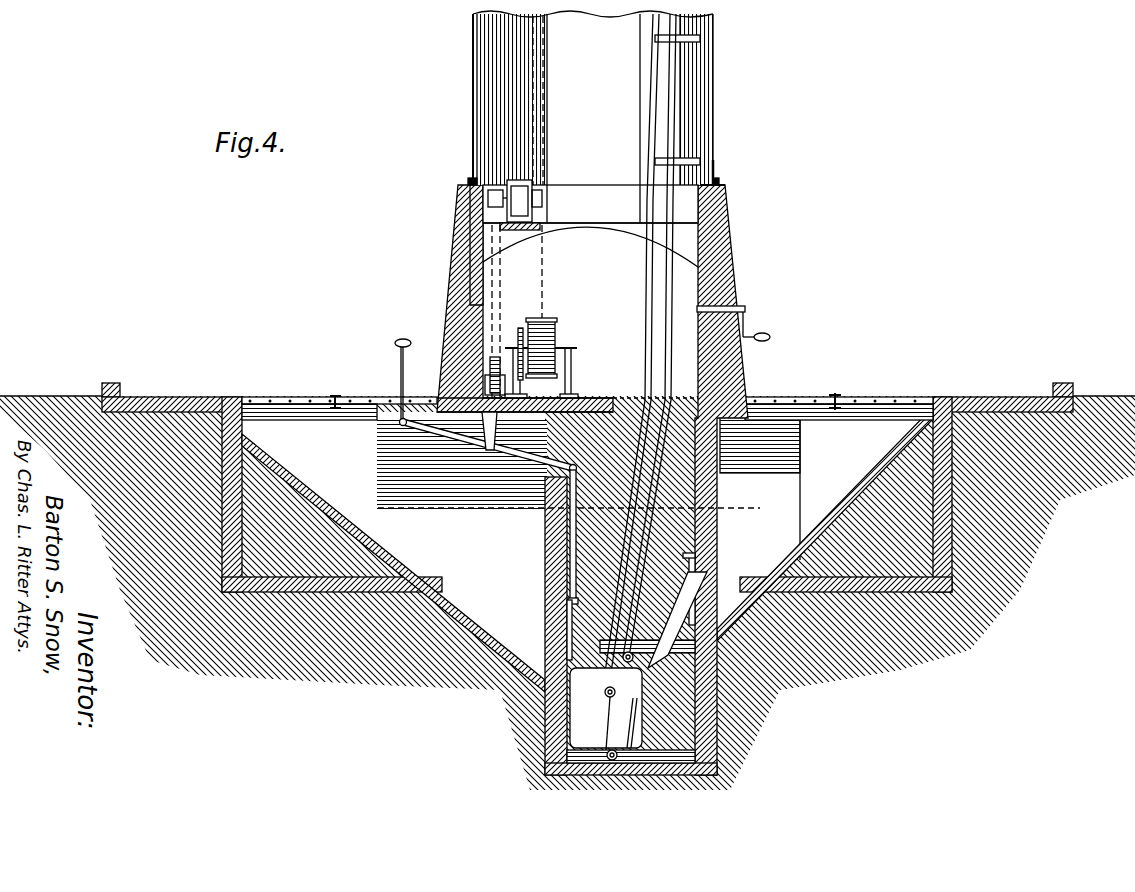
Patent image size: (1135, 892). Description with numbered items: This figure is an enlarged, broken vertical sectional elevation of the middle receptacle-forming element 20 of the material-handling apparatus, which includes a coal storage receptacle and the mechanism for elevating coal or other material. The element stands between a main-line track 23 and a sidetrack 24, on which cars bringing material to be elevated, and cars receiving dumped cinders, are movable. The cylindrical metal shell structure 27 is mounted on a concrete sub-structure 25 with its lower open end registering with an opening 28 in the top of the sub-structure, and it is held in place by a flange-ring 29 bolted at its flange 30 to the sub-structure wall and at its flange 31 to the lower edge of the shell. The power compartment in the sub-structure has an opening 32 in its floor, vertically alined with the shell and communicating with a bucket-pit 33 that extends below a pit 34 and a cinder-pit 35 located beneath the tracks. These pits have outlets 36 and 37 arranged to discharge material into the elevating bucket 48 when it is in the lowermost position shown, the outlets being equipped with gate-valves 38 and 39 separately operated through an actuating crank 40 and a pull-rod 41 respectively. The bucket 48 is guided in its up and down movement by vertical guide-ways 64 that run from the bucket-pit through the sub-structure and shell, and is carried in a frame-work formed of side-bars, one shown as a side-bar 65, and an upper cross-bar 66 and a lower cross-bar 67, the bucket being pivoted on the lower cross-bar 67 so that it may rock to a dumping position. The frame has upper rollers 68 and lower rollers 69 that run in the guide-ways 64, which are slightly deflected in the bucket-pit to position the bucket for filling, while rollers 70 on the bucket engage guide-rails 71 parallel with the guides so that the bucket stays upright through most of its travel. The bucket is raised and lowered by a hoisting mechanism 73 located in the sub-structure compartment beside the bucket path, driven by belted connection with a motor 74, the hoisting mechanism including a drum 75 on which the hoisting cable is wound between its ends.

The centrally located element 20 is at (473, 117).
The main-line track 23 is at (340, 395).
The sidetrack 24 is at (940, 395).
The sub-structure 25 is at (458, 212).
The upright shell structure 27 is at (473, 72).
The opening 28 is at (728, 219).
The flange-ring 29 is at (468, 181).
The flange 30 is at (727, 186).
The flange 31 is at (716, 181).
The opening 32 is at (628, 408).
The bucket-pit 33 is at (578, 476).
The pit 34 is at (765, 408).
The cinder-pit 35 is at (400, 428).
The outlet 36 is at (688, 600).
The outlet 37 is at (548, 624).
The gate-valve 38 is at (705, 585).
The gate-valve 39 is at (570, 652).
The actuating crank 40 is at (760, 335).
The pull-rod 41 is at (404, 340).
The elevating bucket 48 is at (634, 720).
The vertical guide-ways 64 is at (668, 84).
The side-bar 65 is at (643, 690).
The upper cross-bar 66 is at (650, 650).
The lower cross-bar 67 is at (640, 765).
The upper rollers 68 is at (622, 657).
The lower rollers 69 is at (606, 712).
The rollers 70 is at (605, 689).
The guide-rails 71 is at (648, 62).
The hoisting mechanism 73 is at (550, 318).
The motor 74 is at (542, 192).
The drum 75 is at (557, 340).